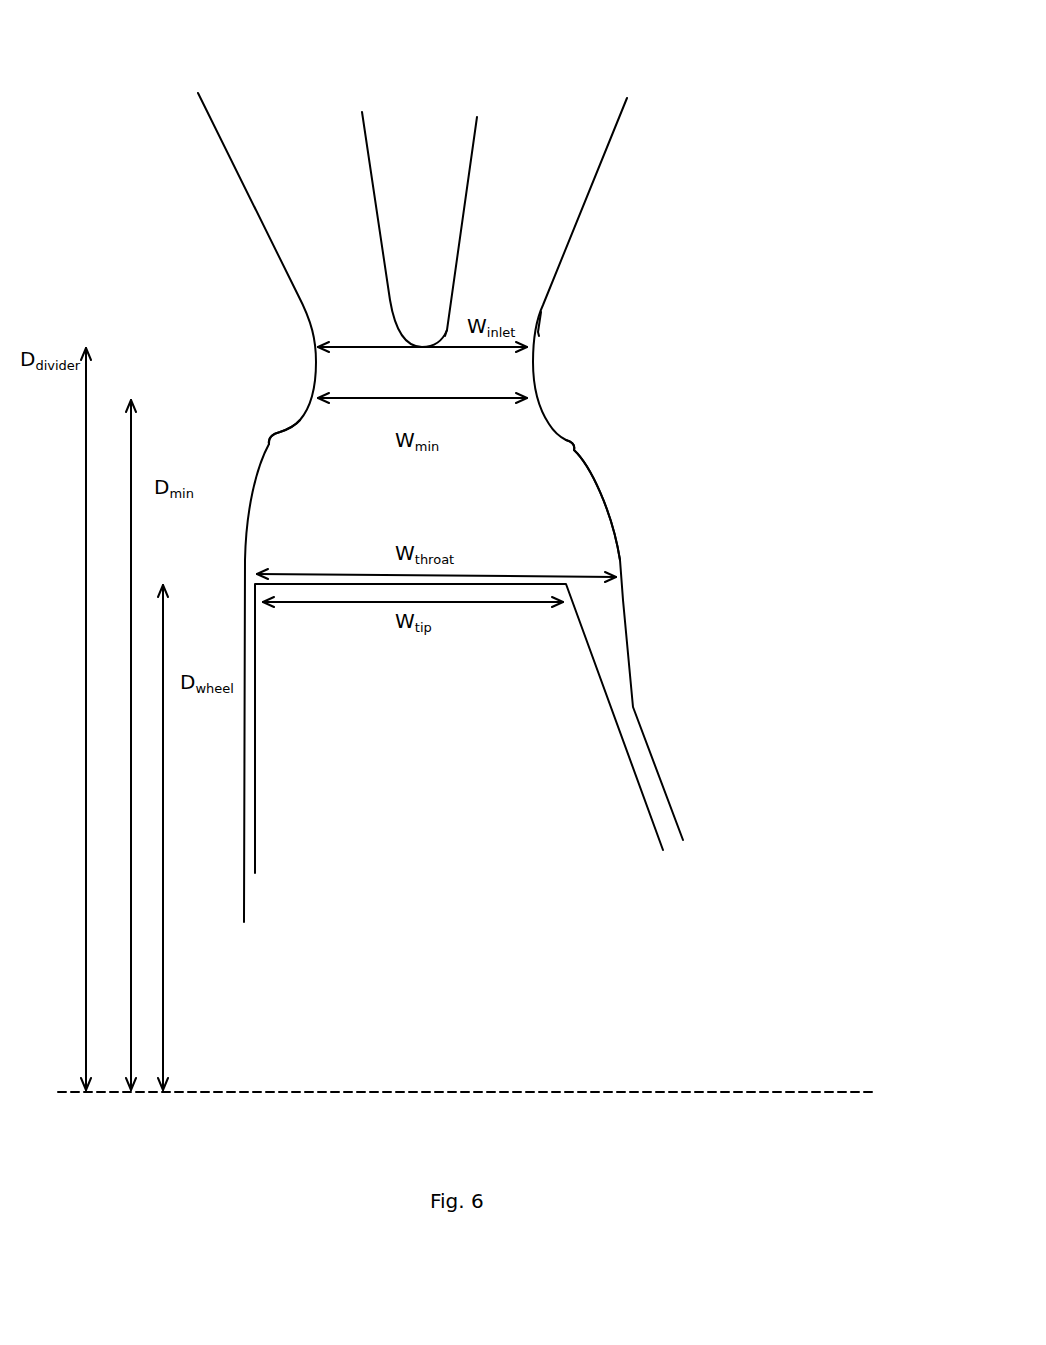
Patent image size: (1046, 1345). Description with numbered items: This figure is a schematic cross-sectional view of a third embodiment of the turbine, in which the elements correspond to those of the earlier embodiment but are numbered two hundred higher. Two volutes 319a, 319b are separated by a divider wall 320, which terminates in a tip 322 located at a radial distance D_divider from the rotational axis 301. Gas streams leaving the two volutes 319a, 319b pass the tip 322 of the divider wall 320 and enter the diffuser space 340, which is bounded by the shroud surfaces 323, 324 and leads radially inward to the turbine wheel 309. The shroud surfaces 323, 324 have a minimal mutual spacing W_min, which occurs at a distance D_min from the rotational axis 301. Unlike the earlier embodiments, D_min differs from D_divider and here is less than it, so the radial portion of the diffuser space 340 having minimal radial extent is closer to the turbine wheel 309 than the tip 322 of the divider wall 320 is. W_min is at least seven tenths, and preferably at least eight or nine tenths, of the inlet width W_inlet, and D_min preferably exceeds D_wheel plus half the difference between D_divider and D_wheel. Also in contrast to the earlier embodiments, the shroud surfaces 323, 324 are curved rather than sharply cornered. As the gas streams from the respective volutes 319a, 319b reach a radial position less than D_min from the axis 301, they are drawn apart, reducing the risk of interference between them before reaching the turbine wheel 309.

The volute 319b is at (268, 143).
The volute 319a is at (557, 172).
The divider wall 320 is at (388, 202).
The tip of the divider wall 322 is at (427, 345).
The shroud surface 323 is at (539, 333).
The shroud surface 324 is at (262, 433).
The diffuser space 340 is at (555, 495).
The turbine wheel 309 is at (593, 780).
The rotational axis 301 is at (518, 1092).